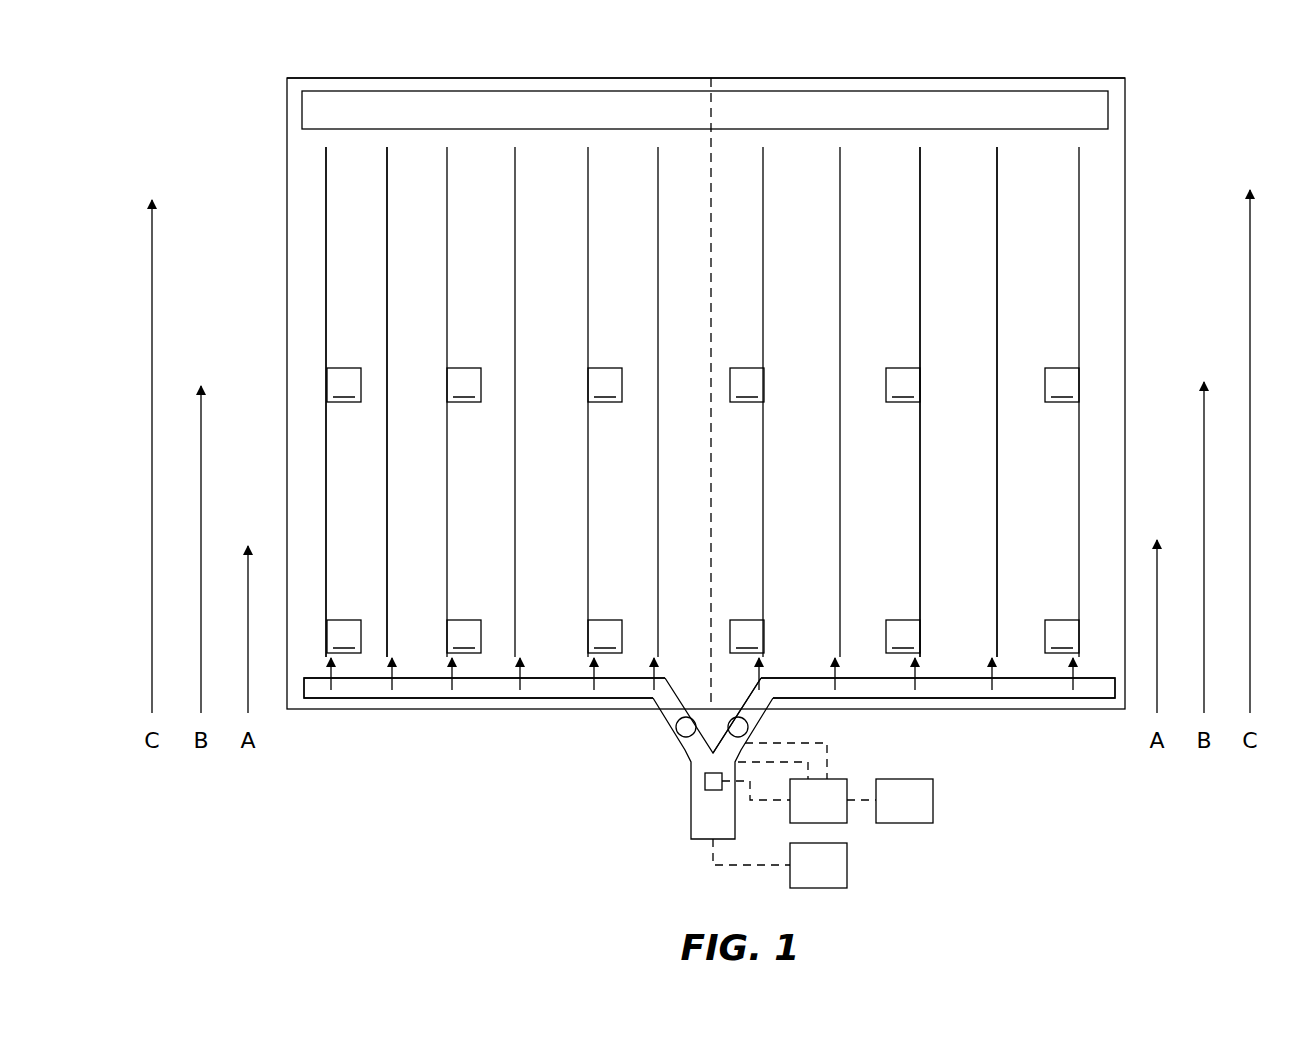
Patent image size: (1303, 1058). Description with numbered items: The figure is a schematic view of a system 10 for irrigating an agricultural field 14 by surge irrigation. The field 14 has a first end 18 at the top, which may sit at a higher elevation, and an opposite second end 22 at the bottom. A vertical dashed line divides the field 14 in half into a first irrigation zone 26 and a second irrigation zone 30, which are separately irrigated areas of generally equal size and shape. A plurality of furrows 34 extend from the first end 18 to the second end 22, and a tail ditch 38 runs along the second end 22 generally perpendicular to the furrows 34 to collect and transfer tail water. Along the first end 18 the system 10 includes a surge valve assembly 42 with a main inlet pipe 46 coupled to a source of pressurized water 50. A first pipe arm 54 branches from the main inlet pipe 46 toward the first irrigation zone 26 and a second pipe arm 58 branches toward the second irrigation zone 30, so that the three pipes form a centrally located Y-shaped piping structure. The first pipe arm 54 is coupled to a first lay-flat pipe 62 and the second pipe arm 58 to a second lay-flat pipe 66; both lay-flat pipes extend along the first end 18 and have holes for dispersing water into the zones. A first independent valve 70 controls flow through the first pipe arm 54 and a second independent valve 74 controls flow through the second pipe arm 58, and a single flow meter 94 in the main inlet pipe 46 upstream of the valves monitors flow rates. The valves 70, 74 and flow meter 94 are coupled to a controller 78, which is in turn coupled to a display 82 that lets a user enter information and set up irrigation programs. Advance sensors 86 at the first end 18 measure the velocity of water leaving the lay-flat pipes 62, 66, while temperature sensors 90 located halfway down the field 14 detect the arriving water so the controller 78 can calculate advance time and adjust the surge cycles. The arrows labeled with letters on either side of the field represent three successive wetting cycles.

The system 10 is at (226, 98).
The agricultural field 14 is at (1130, 131).
The first end 18 is at (427, 709).
The second end 22 is at (426, 78).
The first irrigation zone 26 is at (355, 221).
The second irrigation zone 30 is at (983, 262).
The furrows 34 is at (383, 284).
The tail ditch 38 is at (350, 91).
The surge valve assembly 42 is at (758, 785).
The main inlet pipe 46 is at (691, 826).
The source of pressurized water 50 is at (805, 878).
The first pipe arm 54 is at (662, 712).
The second pipe arm 58 is at (751, 715).
The first lay-flat pipe 62 is at (357, 686).
The second lay-flat pipe 66 is at (1027, 686).
The first independent valve 70 is at (680, 736).
The second independent valve 74 is at (748, 727).
The controller 78 is at (805, 813).
The display 82 is at (891, 813).
The advance sensor 86 is at (703, 636).
The temperature sensor 90 is at (703, 385).
The flow meter 94 is at (713, 791).